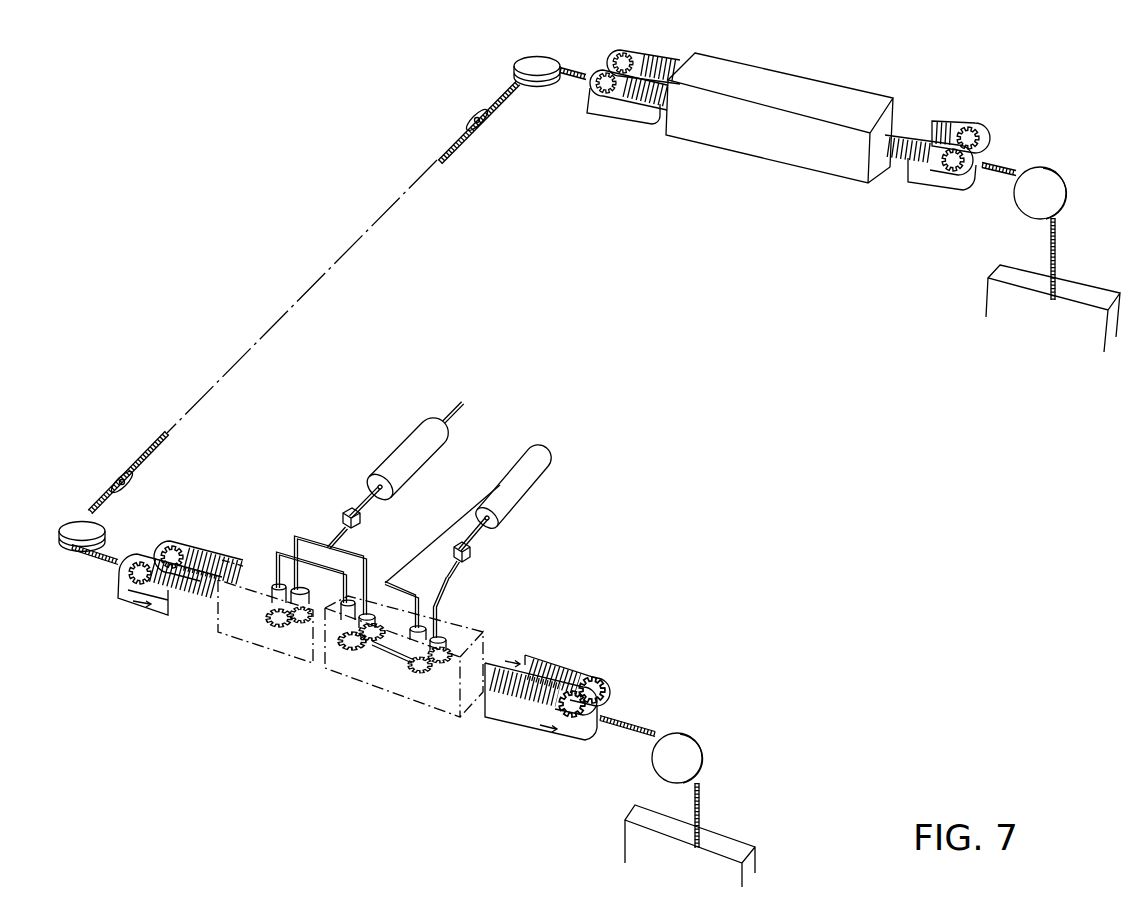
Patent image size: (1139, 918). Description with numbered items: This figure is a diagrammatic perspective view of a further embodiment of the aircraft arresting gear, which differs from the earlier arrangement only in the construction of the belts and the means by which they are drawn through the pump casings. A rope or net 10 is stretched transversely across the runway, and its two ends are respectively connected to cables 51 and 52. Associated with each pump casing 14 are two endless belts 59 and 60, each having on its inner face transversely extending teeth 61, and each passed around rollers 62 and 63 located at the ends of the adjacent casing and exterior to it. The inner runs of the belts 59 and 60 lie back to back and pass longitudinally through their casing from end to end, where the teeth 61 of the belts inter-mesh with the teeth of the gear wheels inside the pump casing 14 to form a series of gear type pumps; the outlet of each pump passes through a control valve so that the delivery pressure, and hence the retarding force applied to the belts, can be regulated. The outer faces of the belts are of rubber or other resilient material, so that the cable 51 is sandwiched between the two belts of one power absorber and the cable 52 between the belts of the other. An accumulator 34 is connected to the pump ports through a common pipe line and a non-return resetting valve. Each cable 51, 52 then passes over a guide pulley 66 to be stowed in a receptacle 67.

The rope or net 10 is at (357, 240).
The pump casing 14 is at (737, 72).
The accumulator 34 is at (537, 457).
The cable 51 is at (112, 563).
The cable 52 is at (573, 70).
The endless belt 59 is at (143, 608).
The endless belt 60 is at (222, 556).
The teeth 61 is at (198, 552).
The roller 62 is at (158, 548).
The roller 63 is at (594, 692).
The guide pulley 66 is at (653, 767).
The receptacle 67 is at (633, 840).